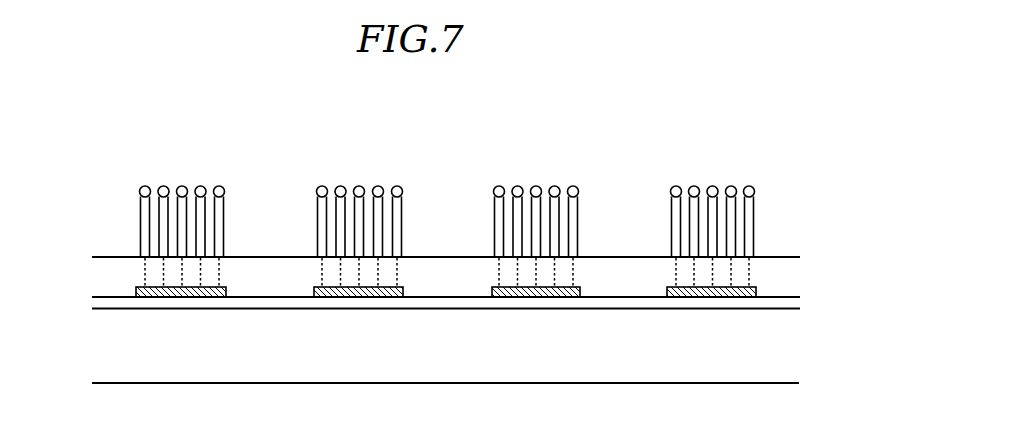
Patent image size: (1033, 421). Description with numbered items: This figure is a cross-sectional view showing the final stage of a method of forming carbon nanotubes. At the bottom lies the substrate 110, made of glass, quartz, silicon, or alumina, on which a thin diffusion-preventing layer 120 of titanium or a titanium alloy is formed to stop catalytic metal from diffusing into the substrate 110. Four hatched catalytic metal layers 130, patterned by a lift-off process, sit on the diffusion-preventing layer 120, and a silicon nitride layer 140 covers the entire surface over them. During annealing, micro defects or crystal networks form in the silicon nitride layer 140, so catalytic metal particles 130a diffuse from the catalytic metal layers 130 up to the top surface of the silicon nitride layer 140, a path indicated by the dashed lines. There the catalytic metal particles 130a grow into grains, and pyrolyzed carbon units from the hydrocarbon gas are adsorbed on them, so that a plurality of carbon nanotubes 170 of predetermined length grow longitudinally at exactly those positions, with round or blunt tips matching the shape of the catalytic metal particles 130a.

The substrate 110 is at (785, 348).
The diffusion-preventing layer 120 is at (785, 303).
The catalytic metal layers 130 is at (757, 292).
The catalytic metal particles 130a is at (378, 186).
The silicon nitride layer 140 is at (625, 273).
The carbon nanotubes 170 is at (482, 196).